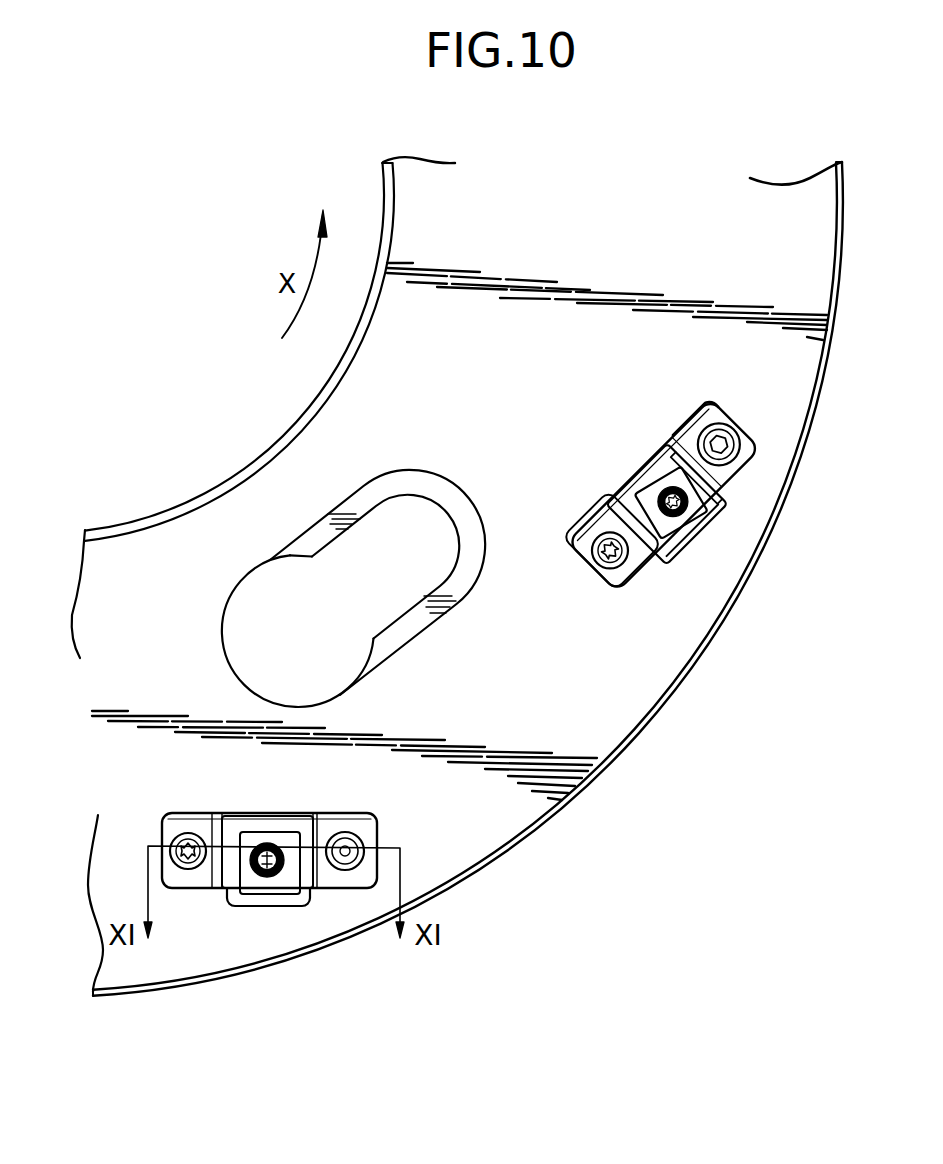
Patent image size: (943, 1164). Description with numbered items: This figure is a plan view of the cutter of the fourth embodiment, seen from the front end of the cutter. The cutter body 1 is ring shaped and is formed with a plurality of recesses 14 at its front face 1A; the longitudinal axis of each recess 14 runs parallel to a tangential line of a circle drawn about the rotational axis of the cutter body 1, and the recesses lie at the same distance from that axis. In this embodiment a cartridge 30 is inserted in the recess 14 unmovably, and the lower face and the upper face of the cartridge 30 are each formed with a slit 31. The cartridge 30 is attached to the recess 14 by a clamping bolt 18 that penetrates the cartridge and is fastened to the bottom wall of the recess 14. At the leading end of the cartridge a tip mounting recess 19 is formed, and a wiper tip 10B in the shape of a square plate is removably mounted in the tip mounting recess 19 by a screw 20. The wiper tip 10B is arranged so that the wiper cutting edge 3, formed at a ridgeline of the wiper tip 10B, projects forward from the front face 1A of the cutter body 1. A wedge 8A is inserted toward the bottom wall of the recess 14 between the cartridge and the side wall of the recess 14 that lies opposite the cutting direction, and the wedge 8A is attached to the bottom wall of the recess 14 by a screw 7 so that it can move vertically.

The cutter body 1 is at (512, 848).
The front face of the cutter body 1A is at (573, 800).
The wiper cutting edge 3 is at (733, 472).
The screw 7 is at (598, 567).
The wedge 8A is at (598, 520).
The wiper tip 10B is at (712, 525).
The recess 14 is at (727, 498).
The clamping bolt 18 is at (707, 422).
The tip mounting recess 19 is at (660, 470).
The screw 20 is at (682, 552).
The cartridge 30 is at (655, 548).
The slit 31 is at (690, 423).